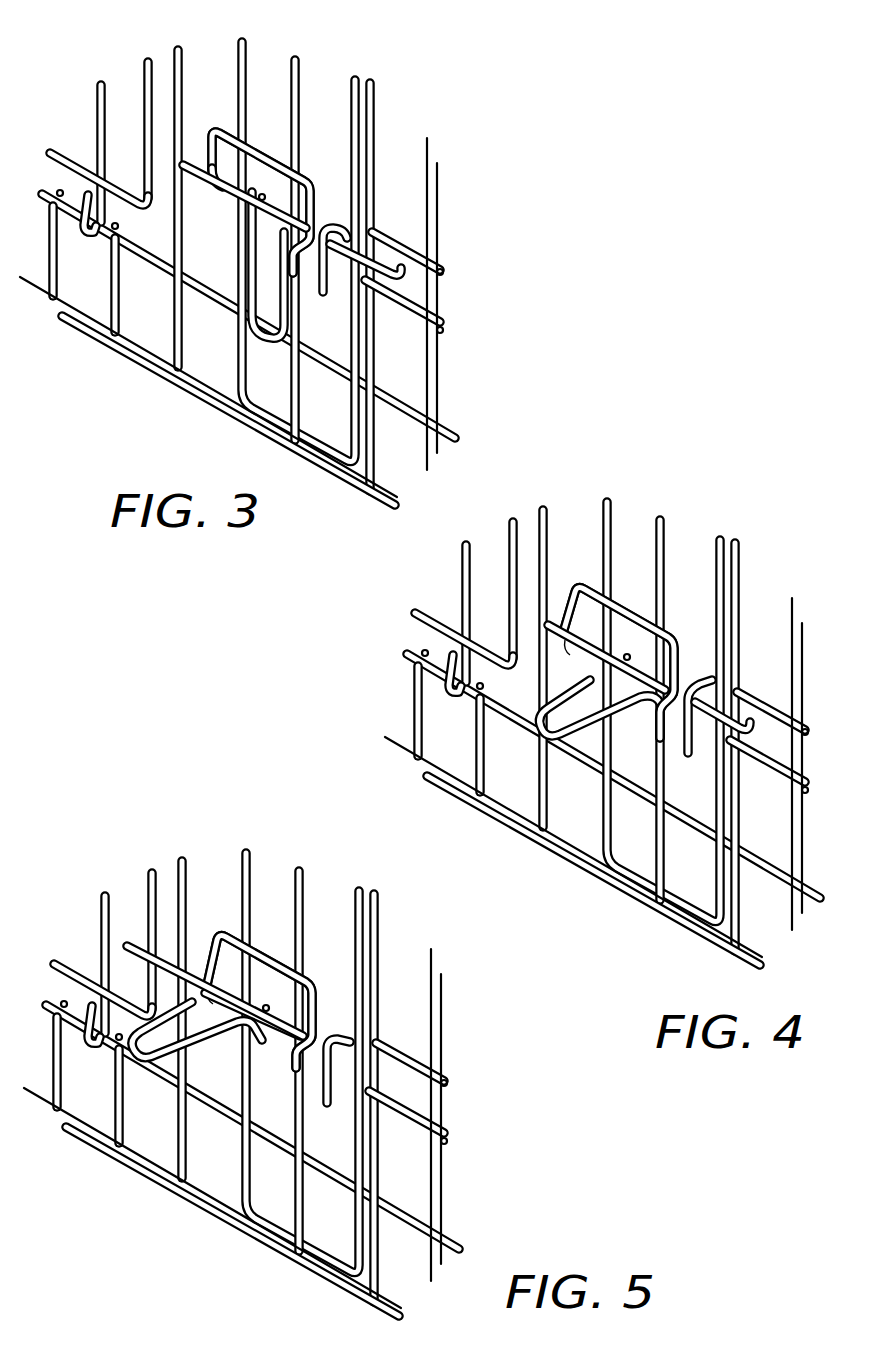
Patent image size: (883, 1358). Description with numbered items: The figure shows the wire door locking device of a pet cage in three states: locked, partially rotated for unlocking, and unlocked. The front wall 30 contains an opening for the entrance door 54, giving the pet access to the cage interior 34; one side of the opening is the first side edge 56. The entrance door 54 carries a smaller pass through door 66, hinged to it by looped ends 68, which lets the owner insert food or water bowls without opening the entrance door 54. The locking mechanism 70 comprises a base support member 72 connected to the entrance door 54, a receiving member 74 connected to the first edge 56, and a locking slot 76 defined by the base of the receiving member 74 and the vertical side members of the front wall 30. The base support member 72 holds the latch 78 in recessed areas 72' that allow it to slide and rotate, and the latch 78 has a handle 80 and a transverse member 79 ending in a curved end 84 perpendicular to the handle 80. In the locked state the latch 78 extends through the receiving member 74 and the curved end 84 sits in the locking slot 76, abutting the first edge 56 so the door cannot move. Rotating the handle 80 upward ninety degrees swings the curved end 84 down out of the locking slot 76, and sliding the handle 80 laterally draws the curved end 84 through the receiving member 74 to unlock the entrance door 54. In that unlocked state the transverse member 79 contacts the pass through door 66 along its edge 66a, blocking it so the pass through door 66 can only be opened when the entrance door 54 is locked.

In FIG. 3, the front wall 30 is at (431, 233).
In FIG. 4, the front wall 30 is at (617, 777).
In FIG. 5, the front wall 30 is at (256, 1128).
In FIG. 3, the cage interior 34 is at (190, 355).
In FIG. 4, the cage interior 34 is at (593, 870).
In FIG. 5, the cage interior 34 is at (232, 1221).
In FIG. 3, the entrance door 54 is at (298, 106).
In FIG. 4, the entrance door 54 is at (686, 700).
In FIG. 5, the entrance door 54 is at (325, 1051).
In FIG. 3, the first side edge 56 is at (374, 128).
In FIG. 4, the first side edge 56 is at (774, 747).
In FIG. 5, the first side edge 56 is at (413, 1098).
In FIG. 3, the pass through door 66 is at (99, 155).
In FIG. 4, the pass through door 66 is at (463, 615).
In FIG. 5, the pass through door 66 is at (102, 966).
In FIG. 3, the edge 66a is at (146, 122).
In FIG. 4, the edge 66a is at (486, 574).
In FIG. 5, the edge 66a is at (125, 925).
In FIG. 3, the looped ends 68 is at (88, 240).
In FIG. 4, the looped ends 68 is at (449, 696).
In FIG. 5, the looped ends 68 is at (88, 1047).
In FIG. 3, the locking mechanism 70 is at (268, 96).
In FIG. 4, the locking mechanism 70 is at (633, 556).
In FIG. 5, the locking mechanism 70 is at (272, 907).
In FIG. 3, the base support member 72 is at (261, 191).
In FIG. 4, the base support member 72 is at (618, 655).
In FIG. 5, the base support member 72 is at (259, 995).
In FIG. 3, the recessed areas 72' is at (237, 183).
In FIG. 4, the recessed areas 72' is at (600, 661).
In FIG. 5, the recessed areas 72' is at (235, 1009).
In FIG. 3, the receiving member 74 is at (336, 232).
In FIG. 4, the receiving member 74 is at (700, 690).
In FIG. 5, the receiving member 74 is at (332, 1040).
In FIG. 3, the locking slot 76 is at (413, 296).
In FIG. 4, the locking slot 76 is at (789, 790).
In FIG. 5, the locking slot 76 is at (428, 1141).
In FIG. 3, the latch 78 is at (230, 203).
In FIG. 4, the latch 78 is at (595, 663).
In FIG. 5, the latch 78 is at (260, 1045).
In FIG. 3, the transverse member 79 is at (340, 265).
In FIG. 4, the transverse member 79 is at (705, 740).
In FIG. 5, the transverse member 79 is at (137, 946).
In FIG. 3, the handle 80 is at (272, 335).
In FIG. 4, the handle 80 is at (540, 728).
In FIG. 5, the handle 80 is at (140, 1060).
In FIG. 3, the curved end 84 is at (415, 275).
In FIG. 4, the curved end 84 is at (793, 732).
In FIG. 5, the curved end 84 is at (432, 1083).